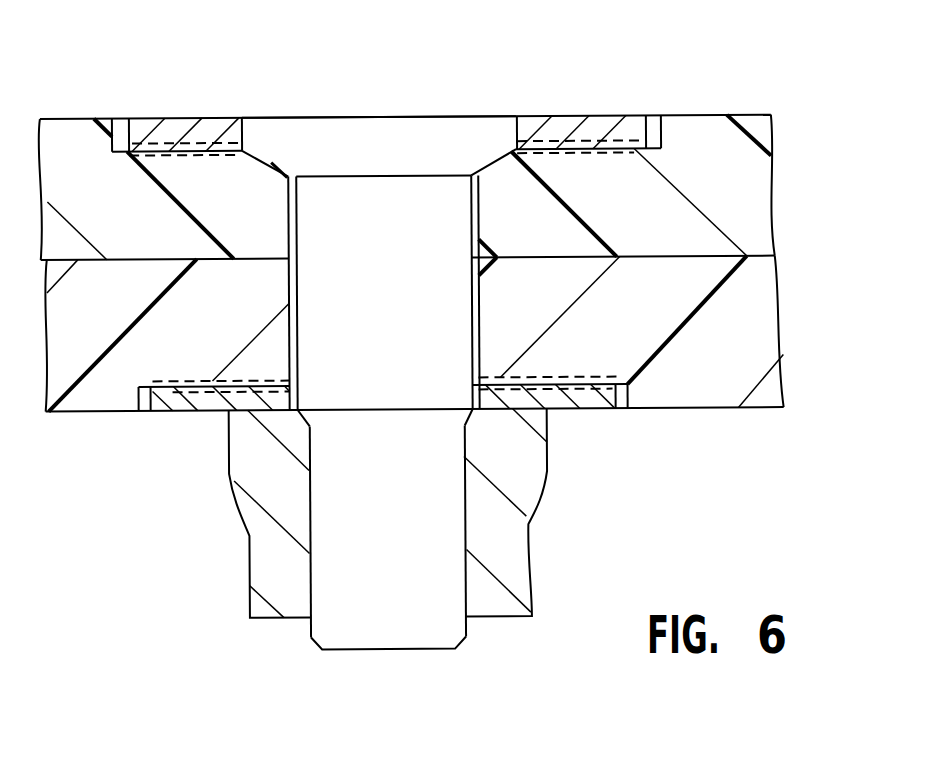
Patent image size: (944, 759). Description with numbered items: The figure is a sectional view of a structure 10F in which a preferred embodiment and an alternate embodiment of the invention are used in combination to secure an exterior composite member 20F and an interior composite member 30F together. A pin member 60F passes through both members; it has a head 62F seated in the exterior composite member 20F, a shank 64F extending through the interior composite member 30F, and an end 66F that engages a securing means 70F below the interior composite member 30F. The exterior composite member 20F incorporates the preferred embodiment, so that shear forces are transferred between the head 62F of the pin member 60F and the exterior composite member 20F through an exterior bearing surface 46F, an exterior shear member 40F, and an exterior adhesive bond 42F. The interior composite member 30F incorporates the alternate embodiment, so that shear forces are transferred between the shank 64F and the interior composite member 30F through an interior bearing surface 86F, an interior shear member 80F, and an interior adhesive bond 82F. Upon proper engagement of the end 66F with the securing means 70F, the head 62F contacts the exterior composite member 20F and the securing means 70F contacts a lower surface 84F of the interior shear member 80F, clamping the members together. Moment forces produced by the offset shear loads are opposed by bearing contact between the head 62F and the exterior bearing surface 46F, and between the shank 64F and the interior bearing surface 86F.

The structure 10F is at (666, 58).
The exterior composite member 20F is at (776, 224).
The interior composite member 30F is at (784, 358).
The exterior shear member 40F is at (576, 117).
The exterior adhesive bond 42F is at (609, 142).
The exterior bearing surface 46F is at (512, 127).
The pin member 60F is at (445, 117).
The head 62F is at (447, 87).
The shank 64F is at (471, 283).
The end 66F is at (453, 650).
The securing means 70F is at (531, 598).
The interior shear member 80F is at (578, 410).
The interior adhesive bond 82F is at (596, 386).
The lower surface 84F is at (203, 410).
The interior bearing surface 86F is at (472, 395).